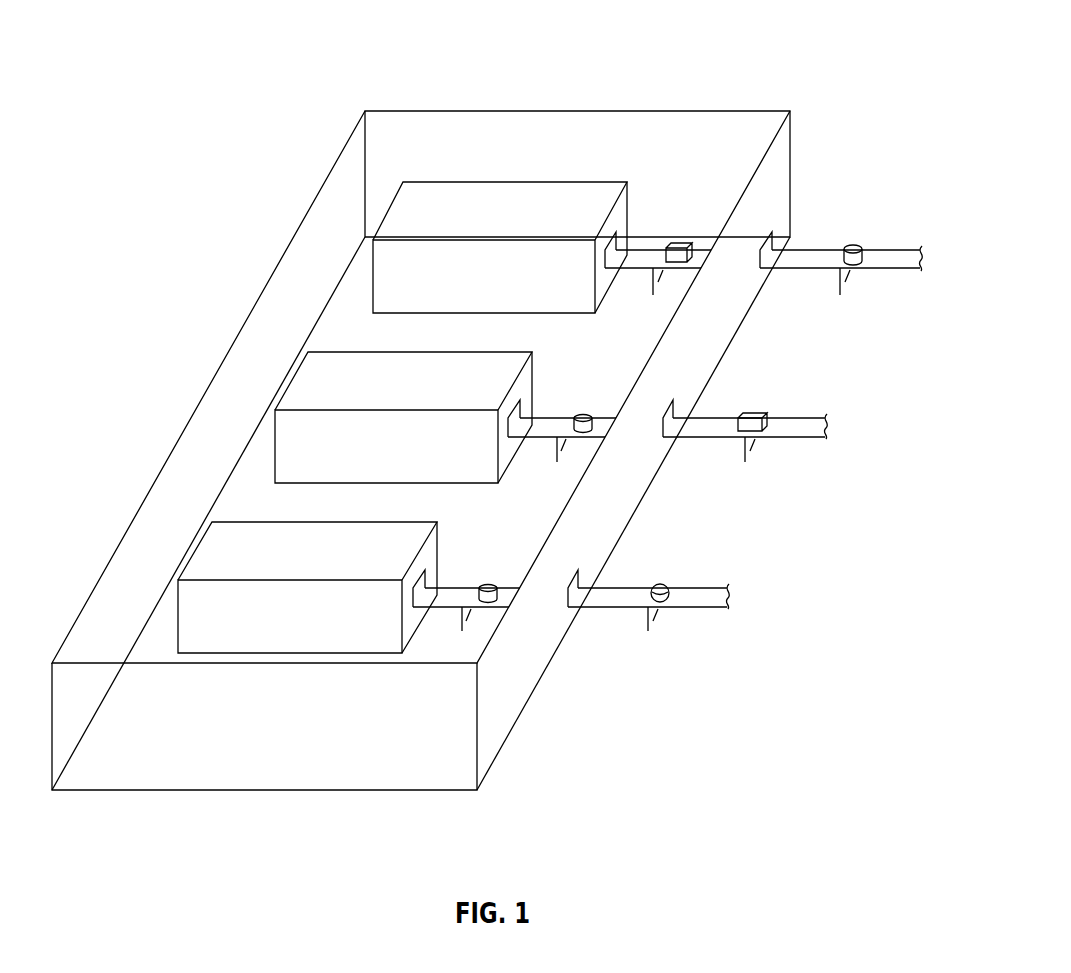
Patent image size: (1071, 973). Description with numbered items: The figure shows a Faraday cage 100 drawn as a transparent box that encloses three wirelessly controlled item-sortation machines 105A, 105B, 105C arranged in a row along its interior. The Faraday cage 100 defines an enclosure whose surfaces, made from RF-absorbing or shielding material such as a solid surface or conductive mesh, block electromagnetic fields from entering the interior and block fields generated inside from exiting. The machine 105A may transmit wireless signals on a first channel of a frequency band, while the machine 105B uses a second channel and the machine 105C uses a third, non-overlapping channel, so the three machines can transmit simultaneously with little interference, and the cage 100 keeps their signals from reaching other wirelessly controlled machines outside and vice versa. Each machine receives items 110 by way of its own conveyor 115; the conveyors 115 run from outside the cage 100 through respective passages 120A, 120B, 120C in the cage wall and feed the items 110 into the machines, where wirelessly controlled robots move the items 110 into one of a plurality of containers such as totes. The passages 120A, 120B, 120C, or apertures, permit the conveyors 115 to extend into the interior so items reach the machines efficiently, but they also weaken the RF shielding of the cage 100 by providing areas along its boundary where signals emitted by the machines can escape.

The Faraday cage 100 is at (396, 110).
The item-sortation machine 105A is at (515, 181).
The item-sortation machine 105B is at (423, 351).
The item-sortation machine 105C is at (326, 521).
The item 110 is at (486, 584).
The conveyor 115 is at (667, 493).
The passage 120A is at (580, 609).
The passage 120B is at (673, 440).
The passage 120C is at (770, 269).